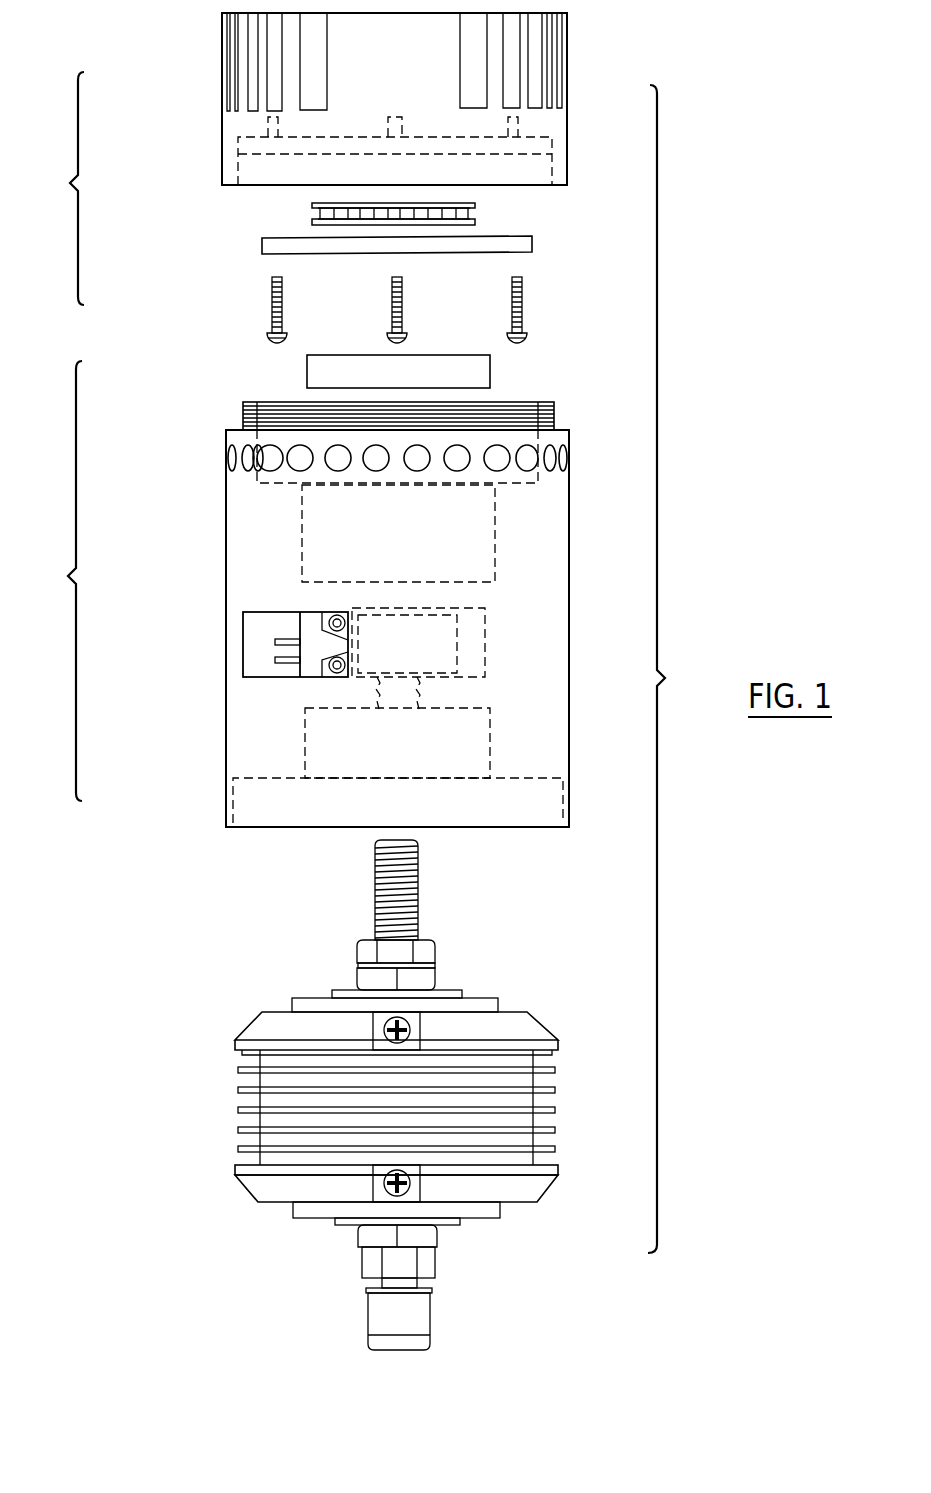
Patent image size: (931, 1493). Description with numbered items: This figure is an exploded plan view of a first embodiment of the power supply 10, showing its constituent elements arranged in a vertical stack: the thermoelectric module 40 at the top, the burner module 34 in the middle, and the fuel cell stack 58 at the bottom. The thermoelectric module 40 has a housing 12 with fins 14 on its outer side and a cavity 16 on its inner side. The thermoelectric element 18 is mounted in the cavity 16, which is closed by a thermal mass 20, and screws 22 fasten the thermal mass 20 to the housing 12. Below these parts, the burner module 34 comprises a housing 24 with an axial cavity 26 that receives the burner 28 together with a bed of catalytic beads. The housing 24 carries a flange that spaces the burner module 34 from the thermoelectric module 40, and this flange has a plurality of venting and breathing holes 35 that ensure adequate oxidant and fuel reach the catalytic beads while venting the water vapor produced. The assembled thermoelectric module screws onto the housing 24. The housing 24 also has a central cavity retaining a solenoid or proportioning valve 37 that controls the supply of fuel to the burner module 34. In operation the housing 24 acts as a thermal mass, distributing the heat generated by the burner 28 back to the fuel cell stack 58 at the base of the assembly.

The power supply 10 is at (676, 669).
The housing 12 is at (222, 103).
The fins 14 is at (265, 40).
The cavity 16 is at (258, 190).
The thermoelectric element 18 is at (476, 212).
The thermal mass 20 is at (262, 246).
The screws 22 is at (272, 302).
The housing 24 is at (245, 556).
The axial cavity 26 is at (302, 518).
The burner 28 is at (307, 372).
The burner module 34 is at (56, 581).
The venting and breathing holes 35 is at (500, 466).
The solenoid or proportioning valve 37 is at (312, 656).
The thermoelectric module 40 is at (57, 188).
The fuel cell stack 58 is at (254, 1030).